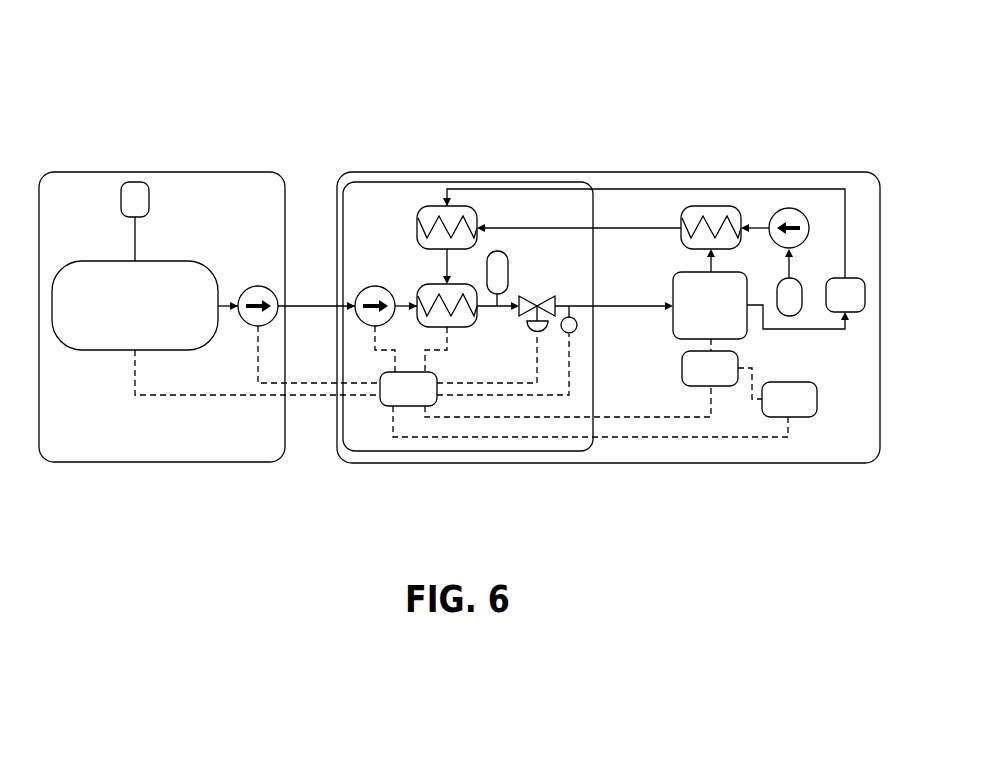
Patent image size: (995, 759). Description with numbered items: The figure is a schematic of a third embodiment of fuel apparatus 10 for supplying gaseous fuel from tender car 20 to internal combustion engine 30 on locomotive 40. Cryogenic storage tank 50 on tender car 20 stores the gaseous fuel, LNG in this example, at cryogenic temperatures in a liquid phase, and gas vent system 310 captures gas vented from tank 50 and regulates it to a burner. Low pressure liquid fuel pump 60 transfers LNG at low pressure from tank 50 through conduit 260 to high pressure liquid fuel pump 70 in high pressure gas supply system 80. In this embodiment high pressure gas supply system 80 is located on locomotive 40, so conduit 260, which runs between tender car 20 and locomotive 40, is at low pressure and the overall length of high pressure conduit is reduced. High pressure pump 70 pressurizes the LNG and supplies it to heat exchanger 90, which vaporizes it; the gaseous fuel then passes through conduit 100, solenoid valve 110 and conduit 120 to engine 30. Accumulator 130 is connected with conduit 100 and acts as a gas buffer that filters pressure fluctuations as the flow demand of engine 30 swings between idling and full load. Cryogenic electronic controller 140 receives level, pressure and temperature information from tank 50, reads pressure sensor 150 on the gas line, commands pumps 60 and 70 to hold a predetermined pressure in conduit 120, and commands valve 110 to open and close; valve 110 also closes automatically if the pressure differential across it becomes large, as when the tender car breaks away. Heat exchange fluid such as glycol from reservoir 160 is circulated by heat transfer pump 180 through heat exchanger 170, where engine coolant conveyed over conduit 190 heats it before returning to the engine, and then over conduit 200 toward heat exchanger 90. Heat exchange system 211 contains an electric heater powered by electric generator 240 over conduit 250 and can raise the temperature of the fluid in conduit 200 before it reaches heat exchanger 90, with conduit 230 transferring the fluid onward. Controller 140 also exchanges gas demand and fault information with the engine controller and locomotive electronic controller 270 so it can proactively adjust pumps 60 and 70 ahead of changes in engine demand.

The fuel apparatus 10 is at (138, 64).
The tender car 20 is at (85, 172).
The internal combustion engine 30 is at (748, 340).
The locomotive 40 is at (745, 172).
The cryogenic storage tank 50 is at (107, 261).
The low pressure liquid fuel pump 60 is at (258, 286).
The high pressure liquid fuel pump 70 is at (375, 286).
The high pressure gas supply system 80 is at (375, 182).
The heat exchanger 90 is at (447, 328).
The conduit 100 is at (497, 308).
The solenoid valve 110 is at (545, 297).
The conduit 120 is at (628, 306).
The accumulator 130 is at (510, 268).
The cryogenic electronic controller 140 is at (385, 406).
The pressure sensor 150 is at (577, 327).
The reservoir 160 is at (803, 278).
The heat exchanger 170 is at (708, 206).
The heat transfer pump 180 is at (788, 208).
The conduit 190 is at (713, 268).
The conduit 200 is at (626, 228).
The heat exchange system 211 is at (478, 220).
The conduit 230 is at (722, 386).
The electric generator 240 is at (850, 313).
The conduit 250 is at (630, 189).
The conduit 260 is at (318, 306).
The locomotive electronic controller 270 is at (800, 382).
The gas vent system 310 is at (149, 205).